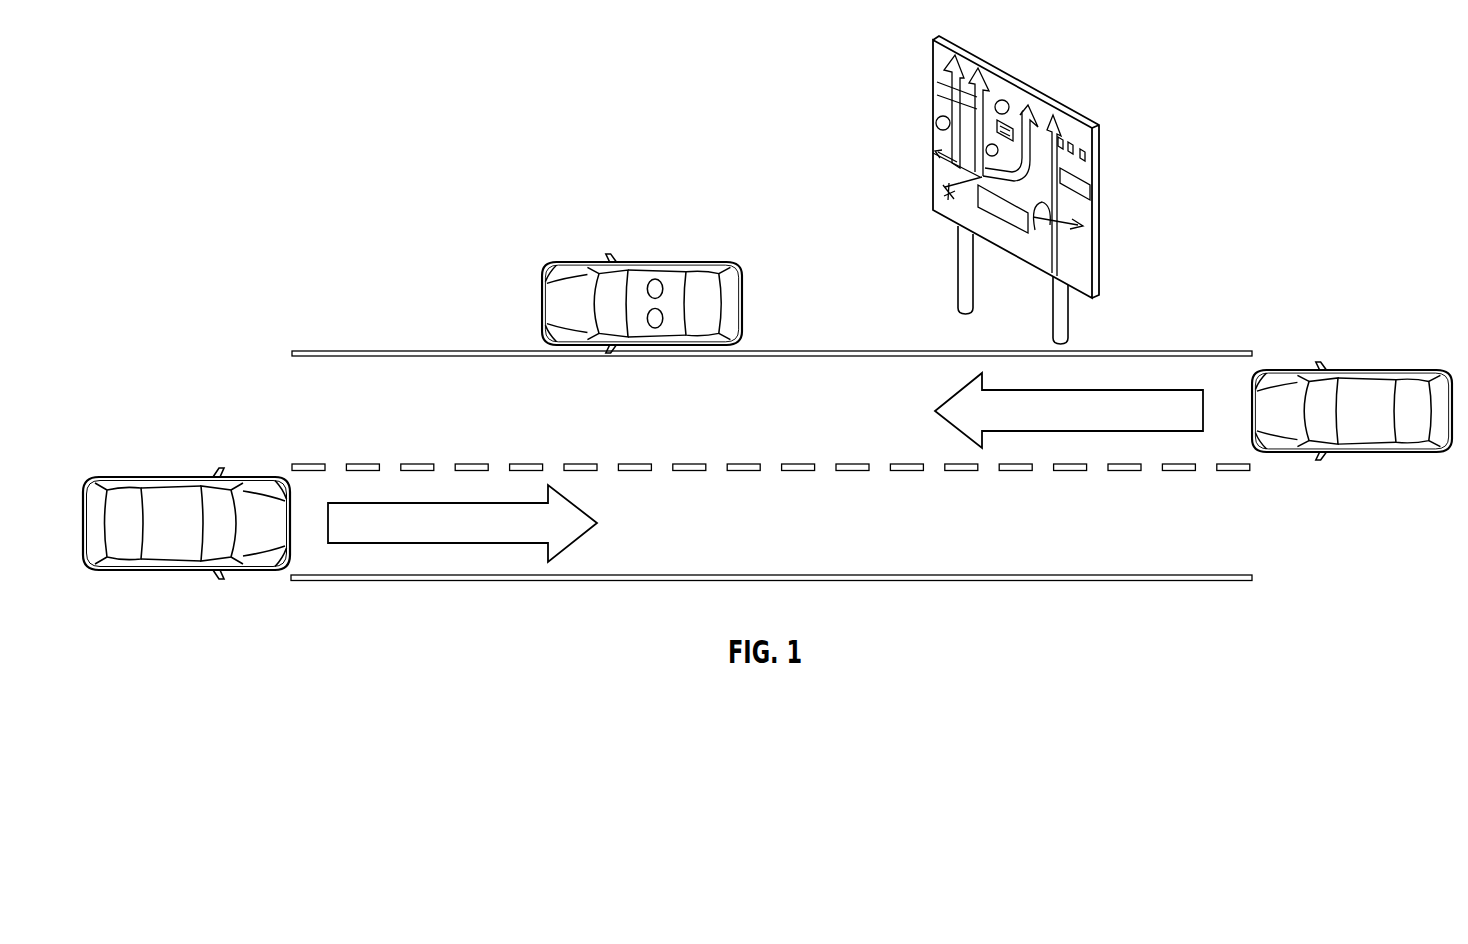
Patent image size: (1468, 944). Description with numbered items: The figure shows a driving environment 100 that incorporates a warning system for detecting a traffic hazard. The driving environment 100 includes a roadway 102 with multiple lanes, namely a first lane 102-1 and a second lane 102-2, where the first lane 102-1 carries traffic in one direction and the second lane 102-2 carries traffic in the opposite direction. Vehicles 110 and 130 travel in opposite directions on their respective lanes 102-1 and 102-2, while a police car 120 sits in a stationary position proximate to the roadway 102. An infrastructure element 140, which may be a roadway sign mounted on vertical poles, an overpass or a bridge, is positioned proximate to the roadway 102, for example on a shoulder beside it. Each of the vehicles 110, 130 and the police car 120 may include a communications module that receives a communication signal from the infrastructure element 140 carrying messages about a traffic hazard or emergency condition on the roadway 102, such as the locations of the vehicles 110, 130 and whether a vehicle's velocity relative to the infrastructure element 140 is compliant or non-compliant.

The driving environment 100 is at (196, 101).
The roadway 102 is at (397, 350).
The first lane 102-1 is at (1230, 530).
The second lane 102-2 is at (302, 420).
The vehicle 110 is at (171, 478).
The police car 120 is at (655, 262).
The vehicle 130 is at (1378, 370).
The infrastructure element 140 is at (1100, 204).